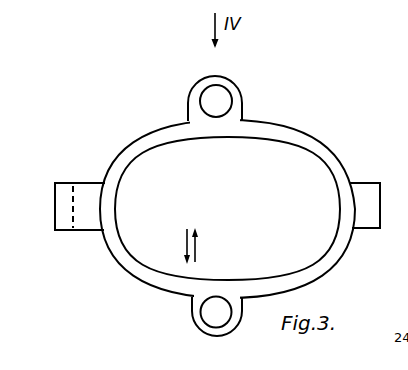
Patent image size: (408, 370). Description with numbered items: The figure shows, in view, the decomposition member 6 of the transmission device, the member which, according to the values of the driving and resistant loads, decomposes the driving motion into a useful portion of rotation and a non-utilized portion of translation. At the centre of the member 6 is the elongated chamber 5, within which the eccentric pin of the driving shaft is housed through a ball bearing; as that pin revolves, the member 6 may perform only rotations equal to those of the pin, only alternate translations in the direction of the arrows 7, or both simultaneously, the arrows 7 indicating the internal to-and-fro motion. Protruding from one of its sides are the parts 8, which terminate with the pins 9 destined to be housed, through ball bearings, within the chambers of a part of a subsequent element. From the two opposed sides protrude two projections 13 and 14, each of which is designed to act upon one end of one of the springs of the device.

The elongated chamber 5 is at (292, 152).
The decomposition member 6 is at (339, 162).
The arrows 7 is at (183, 246).
The parts 8 is at (236, 101).
The pins 9 is at (200, 100).
The projection 13 is at (76, 199).
The projection 14 is at (375, 194).